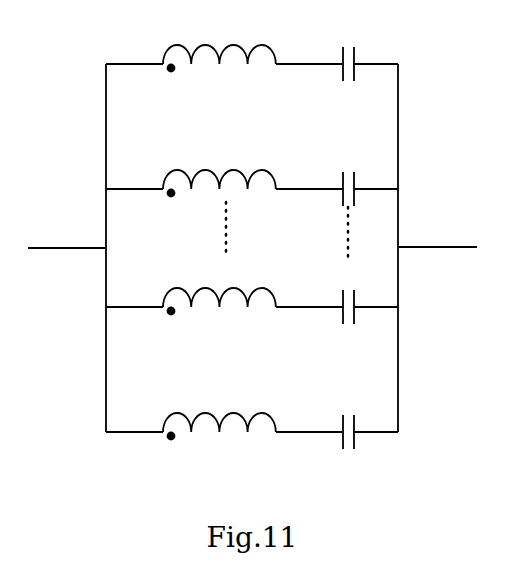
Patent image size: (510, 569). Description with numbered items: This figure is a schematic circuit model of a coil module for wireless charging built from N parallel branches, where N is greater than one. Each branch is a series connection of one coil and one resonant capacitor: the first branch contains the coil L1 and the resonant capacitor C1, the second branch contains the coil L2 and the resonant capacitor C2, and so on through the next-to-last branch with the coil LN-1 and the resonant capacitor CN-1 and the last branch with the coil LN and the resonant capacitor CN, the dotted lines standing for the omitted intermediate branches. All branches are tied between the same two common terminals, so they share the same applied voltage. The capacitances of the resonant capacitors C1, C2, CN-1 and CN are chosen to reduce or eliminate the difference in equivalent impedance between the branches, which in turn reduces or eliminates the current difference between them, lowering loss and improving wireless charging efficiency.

The coil LN is at (191, 44).
The resonant capacitor CN is at (337, 52).
The coil LN-1 is at (191, 170).
The resonant capacitor CN-1 is at (337, 176).
The coil L2 is at (191, 288).
The resonant capacitor C2 is at (337, 295).
The coil L1 is at (191, 413).
The resonant capacitor C1 is at (337, 419).